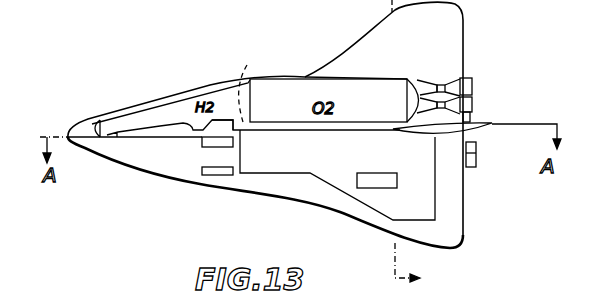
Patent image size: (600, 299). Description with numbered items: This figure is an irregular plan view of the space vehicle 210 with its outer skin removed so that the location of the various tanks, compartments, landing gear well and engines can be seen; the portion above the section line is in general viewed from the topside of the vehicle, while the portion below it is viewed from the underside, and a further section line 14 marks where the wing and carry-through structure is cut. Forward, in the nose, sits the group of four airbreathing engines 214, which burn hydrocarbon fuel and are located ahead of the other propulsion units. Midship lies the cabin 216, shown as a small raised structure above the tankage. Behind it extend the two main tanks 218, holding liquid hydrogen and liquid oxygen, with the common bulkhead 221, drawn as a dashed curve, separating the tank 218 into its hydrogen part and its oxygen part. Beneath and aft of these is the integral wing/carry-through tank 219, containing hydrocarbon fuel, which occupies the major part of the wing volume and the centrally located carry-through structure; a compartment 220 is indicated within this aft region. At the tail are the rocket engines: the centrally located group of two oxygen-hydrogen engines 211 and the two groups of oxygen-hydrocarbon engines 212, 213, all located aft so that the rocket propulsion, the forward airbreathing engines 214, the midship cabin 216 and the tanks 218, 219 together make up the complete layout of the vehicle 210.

The space vehicle 210 is at (131, 100).
The engines 211 is at (472, 103).
The engines 212 is at (472, 86).
The engines 213 is at (476, 153).
The airbreathing engines 214 is at (202, 172).
The cabin 216 is at (222, 112).
The main tanks 218 is at (172, 110).
The integral wing/carry-through tanks 219 is at (288, 165).
The payload compartment 220 is at (377, 188).
The common bulkhead 221 is at (259, 84).
The section line 14 is at (423, 146).